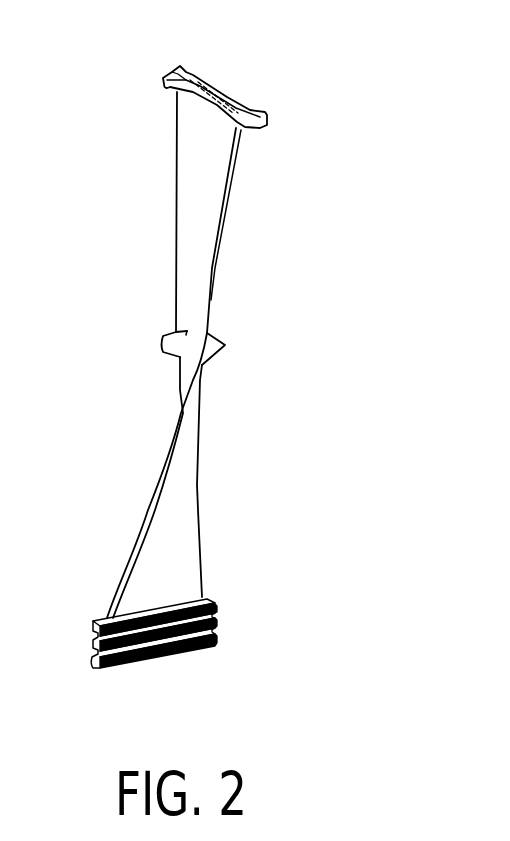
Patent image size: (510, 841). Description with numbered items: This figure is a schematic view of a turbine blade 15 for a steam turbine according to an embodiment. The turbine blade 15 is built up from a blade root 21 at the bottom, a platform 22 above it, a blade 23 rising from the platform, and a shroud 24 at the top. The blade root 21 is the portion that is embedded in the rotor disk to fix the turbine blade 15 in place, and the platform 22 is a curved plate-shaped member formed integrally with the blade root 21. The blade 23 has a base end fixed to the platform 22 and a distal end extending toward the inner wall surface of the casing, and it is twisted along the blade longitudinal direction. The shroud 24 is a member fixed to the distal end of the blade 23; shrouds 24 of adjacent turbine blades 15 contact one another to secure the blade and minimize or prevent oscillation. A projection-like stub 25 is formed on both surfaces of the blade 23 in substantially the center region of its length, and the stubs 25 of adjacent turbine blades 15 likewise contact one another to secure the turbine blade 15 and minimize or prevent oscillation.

The turbine blade 15 is at (342, 316).
The blade root 21 is at (168, 648).
The platform 22 is at (214, 600).
The blade 23 is at (232, 99).
The shroud 24 is at (199, 77).
The stub 25 is at (163, 335).